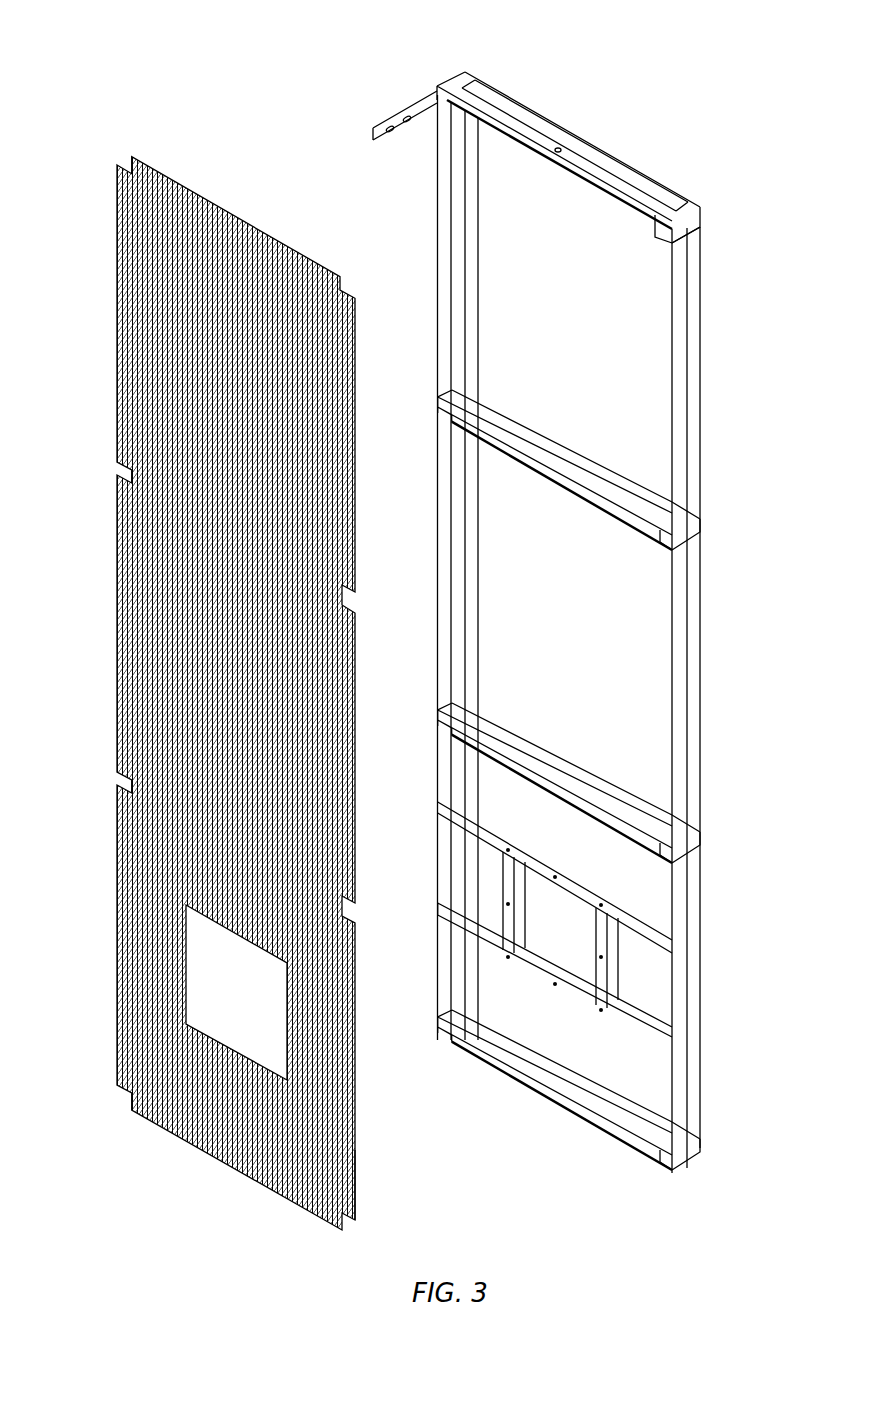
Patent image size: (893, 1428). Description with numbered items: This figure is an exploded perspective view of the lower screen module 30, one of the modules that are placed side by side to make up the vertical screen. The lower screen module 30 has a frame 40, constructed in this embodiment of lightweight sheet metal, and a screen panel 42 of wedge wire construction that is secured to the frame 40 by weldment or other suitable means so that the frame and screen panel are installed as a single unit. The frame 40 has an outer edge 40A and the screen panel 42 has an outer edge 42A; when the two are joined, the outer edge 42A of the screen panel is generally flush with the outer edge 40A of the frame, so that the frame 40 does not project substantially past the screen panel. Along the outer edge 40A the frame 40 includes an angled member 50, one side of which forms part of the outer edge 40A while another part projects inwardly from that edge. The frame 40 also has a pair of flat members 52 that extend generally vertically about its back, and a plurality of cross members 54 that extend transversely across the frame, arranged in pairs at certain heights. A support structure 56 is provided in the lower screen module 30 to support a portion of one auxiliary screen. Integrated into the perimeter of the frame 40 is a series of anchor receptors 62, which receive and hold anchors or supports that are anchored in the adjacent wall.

The lower screen module 30 is at (634, 52).
The frame 40 is at (737, 242).
The outer edge of the frame 40A is at (625, 926).
The screen panel 42 is at (210, 680).
The outer edge of the screen panel 42A is at (342, 1157).
The angled member 50 is at (677, 313).
The flat members 52 is at (690, 360).
The cross members 54 is at (622, 480).
The support structure 56 is at (603, 980).
The anchor receptors 62 is at (690, 535).